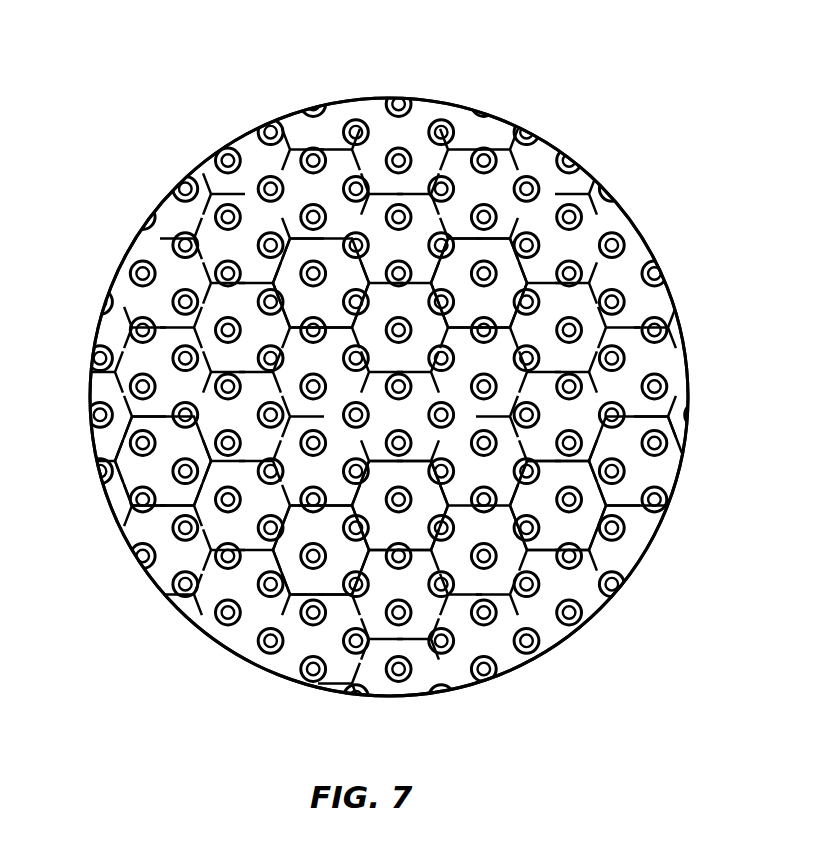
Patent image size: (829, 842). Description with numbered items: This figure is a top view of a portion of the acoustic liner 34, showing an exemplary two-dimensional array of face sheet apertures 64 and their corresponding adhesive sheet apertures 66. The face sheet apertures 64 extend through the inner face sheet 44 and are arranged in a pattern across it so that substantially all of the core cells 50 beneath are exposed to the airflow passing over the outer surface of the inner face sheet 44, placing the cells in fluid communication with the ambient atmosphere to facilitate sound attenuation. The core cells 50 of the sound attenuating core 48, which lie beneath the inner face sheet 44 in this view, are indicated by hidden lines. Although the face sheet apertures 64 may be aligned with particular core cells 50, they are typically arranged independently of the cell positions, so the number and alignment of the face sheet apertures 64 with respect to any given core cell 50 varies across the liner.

The acoustic liner 34 is at (115, 115).
The inner face sheet 44 is at (247, 143).
The sound attenuating core 48 is at (530, 157).
The core cells 50 is at (625, 500).
The face sheet apertures 64 is at (625, 295).
The adhesive sheet apertures 66 is at (614, 357).